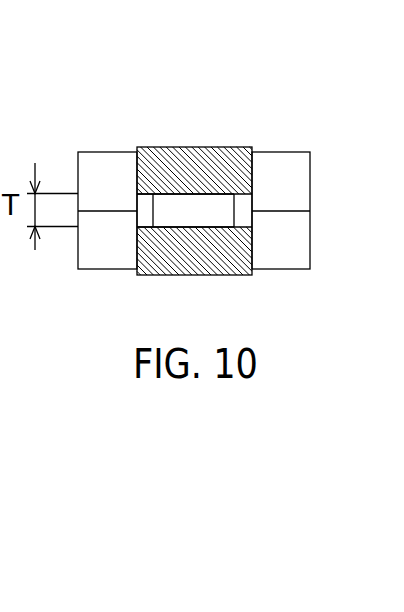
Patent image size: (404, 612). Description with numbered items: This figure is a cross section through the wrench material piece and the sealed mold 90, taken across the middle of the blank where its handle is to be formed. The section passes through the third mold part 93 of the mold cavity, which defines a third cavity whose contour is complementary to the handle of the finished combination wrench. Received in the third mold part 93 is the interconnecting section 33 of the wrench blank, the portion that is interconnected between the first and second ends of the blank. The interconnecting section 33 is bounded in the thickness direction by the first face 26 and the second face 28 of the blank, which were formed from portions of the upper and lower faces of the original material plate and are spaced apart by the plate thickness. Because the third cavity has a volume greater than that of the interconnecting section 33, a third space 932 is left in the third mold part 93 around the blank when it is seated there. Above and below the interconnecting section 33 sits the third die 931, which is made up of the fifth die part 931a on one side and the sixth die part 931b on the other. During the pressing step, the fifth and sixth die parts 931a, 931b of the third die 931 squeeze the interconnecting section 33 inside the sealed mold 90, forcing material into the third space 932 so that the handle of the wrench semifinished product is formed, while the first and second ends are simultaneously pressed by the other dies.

The sealed mold 90 is at (107, 252).
The third mold part 93 is at (244, 185).
The third die 931 is at (194, 181).
The fifth die part 931a is at (180, 167).
The sixth die part 931b is at (192, 255).
The third space 932 is at (246, 206).
The interconnecting section 33 is at (172, 212).
The first face 26 is at (228, 194).
The second face 28 is at (220, 229).